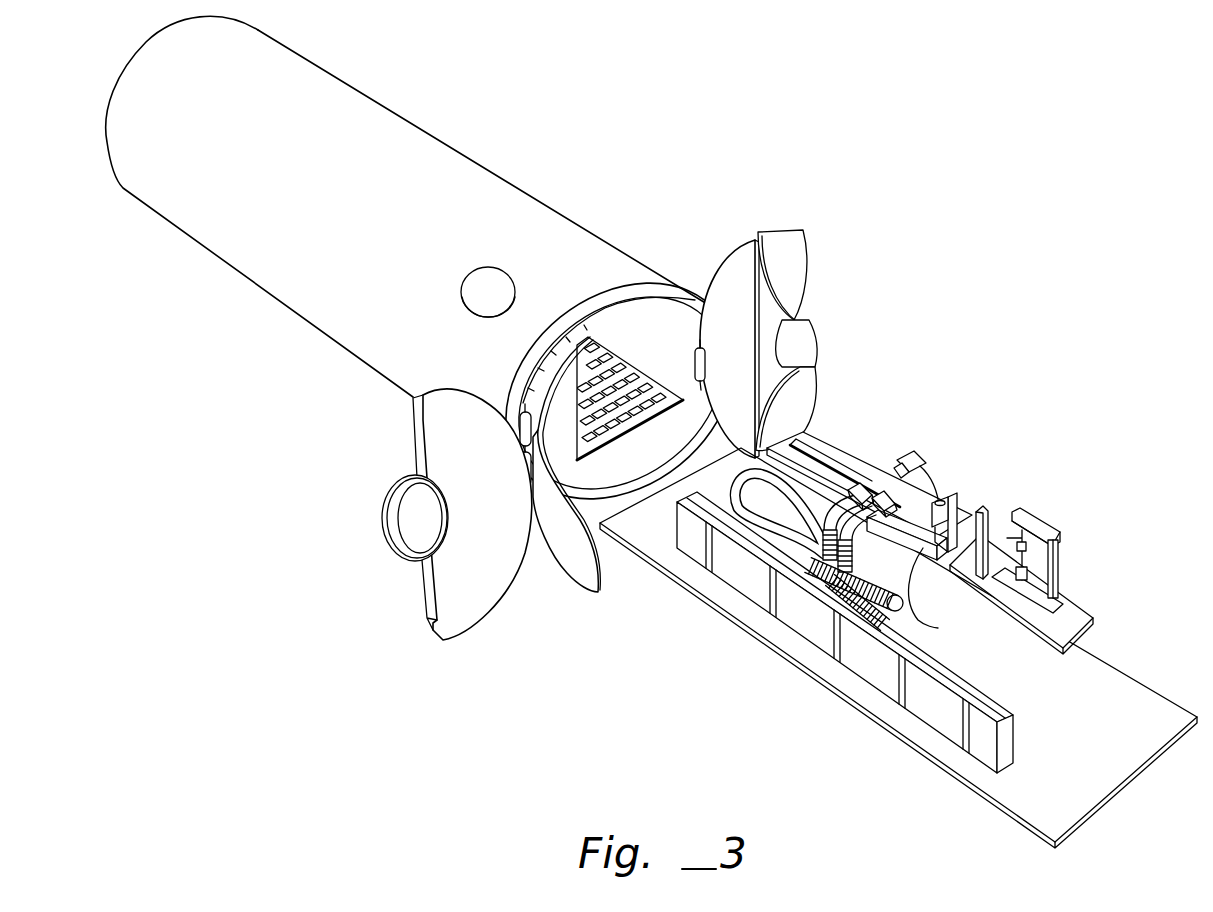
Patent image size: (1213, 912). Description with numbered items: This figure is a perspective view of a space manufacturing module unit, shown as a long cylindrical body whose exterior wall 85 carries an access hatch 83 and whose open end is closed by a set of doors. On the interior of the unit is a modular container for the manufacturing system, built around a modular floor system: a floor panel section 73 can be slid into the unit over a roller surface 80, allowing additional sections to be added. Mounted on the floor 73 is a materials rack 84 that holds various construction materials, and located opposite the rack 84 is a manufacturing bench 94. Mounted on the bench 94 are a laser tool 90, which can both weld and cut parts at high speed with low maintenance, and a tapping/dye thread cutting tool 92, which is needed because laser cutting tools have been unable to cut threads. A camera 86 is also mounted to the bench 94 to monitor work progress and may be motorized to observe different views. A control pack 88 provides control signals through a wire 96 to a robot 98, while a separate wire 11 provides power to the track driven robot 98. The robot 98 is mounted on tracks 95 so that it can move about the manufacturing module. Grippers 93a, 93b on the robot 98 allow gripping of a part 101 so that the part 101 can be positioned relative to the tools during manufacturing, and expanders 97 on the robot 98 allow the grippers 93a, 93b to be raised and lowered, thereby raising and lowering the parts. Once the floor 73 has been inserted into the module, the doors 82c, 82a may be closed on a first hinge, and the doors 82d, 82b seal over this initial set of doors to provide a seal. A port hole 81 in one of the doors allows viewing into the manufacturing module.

The exterior wall 85 is at (508, 192).
The access hatch 83 is at (498, 278).
The roller surface 80 is at (620, 440).
The door 82a is at (740, 252).
The door 82b is at (437, 428).
The door 82c is at (576, 582).
The door 82d is at (802, 250).
The port hole 81 is at (410, 518).
The floor panel section 73 is at (1128, 786).
The materials rack 84 is at (1014, 740).
The wire 11 is at (750, 520).
The part 101 is at (817, 470).
The expanders 97 is at (827, 527).
The robot 98 is at (840, 548).
The gripper 93a is at (857, 486).
The gripper 93b is at (882, 494).
The camera 86 is at (923, 462).
The tracks 95 is at (890, 597).
The wire 96 is at (925, 622).
The manufacturing bench 94 is at (1083, 622).
The control pack 88 is at (940, 560).
The laser tool 90 is at (952, 502).
The tapping/dye thread cutting tool 92 is at (1050, 540).